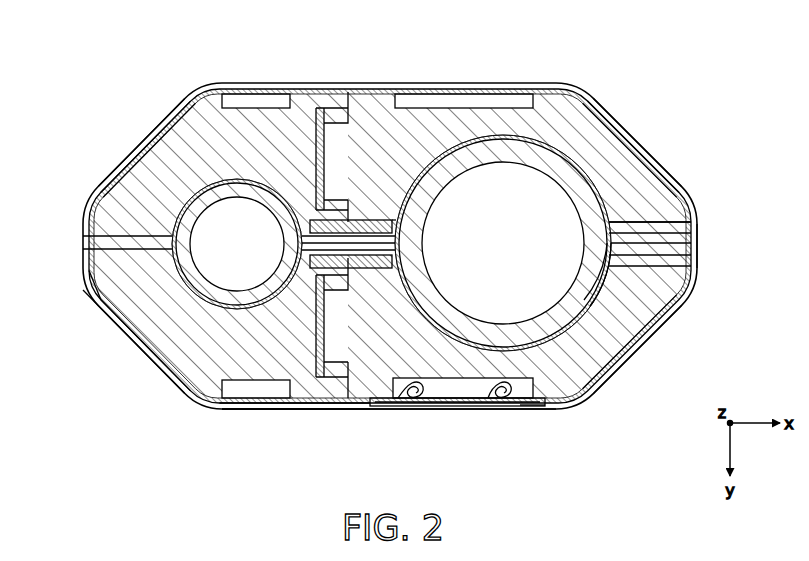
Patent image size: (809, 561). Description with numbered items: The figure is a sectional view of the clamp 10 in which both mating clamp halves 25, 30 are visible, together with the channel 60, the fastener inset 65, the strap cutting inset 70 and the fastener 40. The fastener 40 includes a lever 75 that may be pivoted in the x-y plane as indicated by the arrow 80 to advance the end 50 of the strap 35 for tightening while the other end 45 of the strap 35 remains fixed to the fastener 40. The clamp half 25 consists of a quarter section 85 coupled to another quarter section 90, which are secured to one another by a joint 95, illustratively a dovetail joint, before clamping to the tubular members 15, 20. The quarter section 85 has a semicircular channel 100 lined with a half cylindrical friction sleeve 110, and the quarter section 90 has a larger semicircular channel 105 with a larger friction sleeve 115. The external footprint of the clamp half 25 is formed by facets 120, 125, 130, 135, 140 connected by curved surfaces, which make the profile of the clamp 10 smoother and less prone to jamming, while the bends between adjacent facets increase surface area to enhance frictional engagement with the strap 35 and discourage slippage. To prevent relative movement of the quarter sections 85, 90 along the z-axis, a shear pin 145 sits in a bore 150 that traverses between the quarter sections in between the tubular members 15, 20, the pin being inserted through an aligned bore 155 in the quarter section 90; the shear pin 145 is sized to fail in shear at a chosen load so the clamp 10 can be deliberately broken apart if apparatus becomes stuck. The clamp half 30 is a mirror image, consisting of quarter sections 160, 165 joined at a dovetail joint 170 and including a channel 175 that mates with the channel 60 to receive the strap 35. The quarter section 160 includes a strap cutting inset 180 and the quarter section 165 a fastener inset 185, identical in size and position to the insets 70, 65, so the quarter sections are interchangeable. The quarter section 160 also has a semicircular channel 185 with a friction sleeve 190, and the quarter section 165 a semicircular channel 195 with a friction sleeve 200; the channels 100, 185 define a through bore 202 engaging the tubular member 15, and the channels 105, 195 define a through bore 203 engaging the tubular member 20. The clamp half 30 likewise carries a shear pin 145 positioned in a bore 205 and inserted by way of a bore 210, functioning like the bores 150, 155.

The clamp 10 is at (84, 90).
The tubular member 15 is at (196, 190).
The tubular member 20 is at (587, 178).
The clamp half 25 is at (358, 422).
The clamp half 30 is at (441, 80).
The strap 35 is at (303, 398).
The fastener 40 is at (478, 400).
The end of the strap 45 is at (510, 400).
The end of the strap 50 is at (387, 398).
The channel 60 is at (107, 318).
The fastener inset 65 is at (443, 384).
The strap cutting inset 70 is at (231, 390).
The lever 75 is at (545, 408).
The arrow 80 is at (578, 421).
The quarter section 85 is at (178, 337).
The quarter section 90 is at (617, 343).
The joint 95 is at (318, 377).
The semicircular channel 100 is at (168, 257).
The semicircular channel 105 is at (607, 272).
The friction sleeve 110 is at (168, 262).
The friction sleeve 115 is at (603, 288).
The facet 120 is at (84, 242).
The facet 125 is at (130, 352).
The facet 130 is at (258, 411).
The facet 135 is at (618, 383).
The facet 140 is at (700, 270).
The shear pin 145 is at (375, 223).
The bore 150 is at (400, 268).
The bore 155 is at (665, 263).
The quarter section 160 is at (168, 162).
The quarter section 165 is at (608, 144).
The dovetail joint 170 is at (318, 210).
The channel 175 is at (392, 90).
The strap cutting inset 180 is at (272, 103).
The fastener inset 185 is at (221, 176).
The friction sleeve 190 is at (233, 178).
The semicircular channel 195 is at (532, 136).
The friction sleeve 200 is at (553, 140).
The through bore 202 is at (221, 252).
The through bore 203 is at (504, 190).
The bore 205 is at (397, 221).
The bore 210 is at (651, 218).